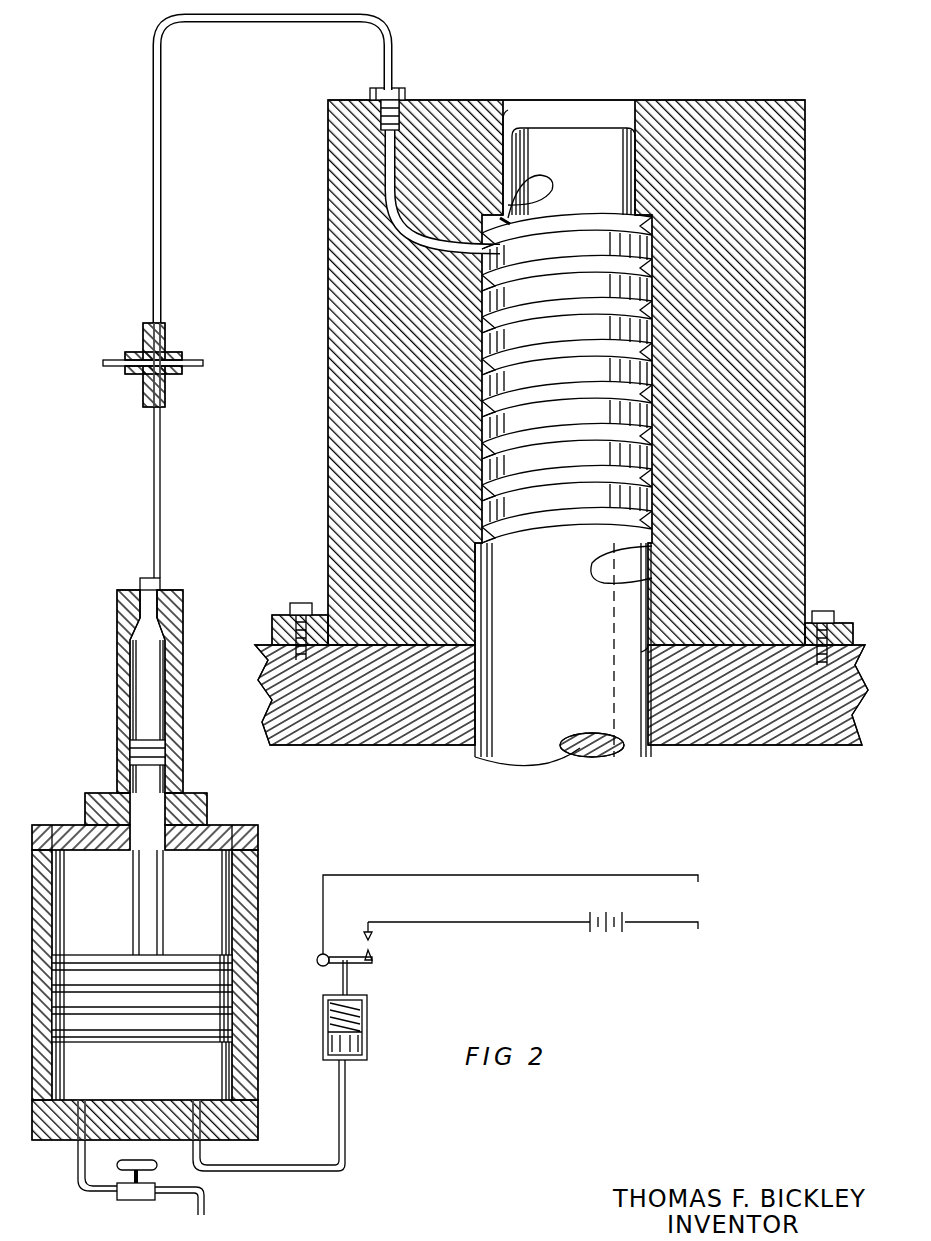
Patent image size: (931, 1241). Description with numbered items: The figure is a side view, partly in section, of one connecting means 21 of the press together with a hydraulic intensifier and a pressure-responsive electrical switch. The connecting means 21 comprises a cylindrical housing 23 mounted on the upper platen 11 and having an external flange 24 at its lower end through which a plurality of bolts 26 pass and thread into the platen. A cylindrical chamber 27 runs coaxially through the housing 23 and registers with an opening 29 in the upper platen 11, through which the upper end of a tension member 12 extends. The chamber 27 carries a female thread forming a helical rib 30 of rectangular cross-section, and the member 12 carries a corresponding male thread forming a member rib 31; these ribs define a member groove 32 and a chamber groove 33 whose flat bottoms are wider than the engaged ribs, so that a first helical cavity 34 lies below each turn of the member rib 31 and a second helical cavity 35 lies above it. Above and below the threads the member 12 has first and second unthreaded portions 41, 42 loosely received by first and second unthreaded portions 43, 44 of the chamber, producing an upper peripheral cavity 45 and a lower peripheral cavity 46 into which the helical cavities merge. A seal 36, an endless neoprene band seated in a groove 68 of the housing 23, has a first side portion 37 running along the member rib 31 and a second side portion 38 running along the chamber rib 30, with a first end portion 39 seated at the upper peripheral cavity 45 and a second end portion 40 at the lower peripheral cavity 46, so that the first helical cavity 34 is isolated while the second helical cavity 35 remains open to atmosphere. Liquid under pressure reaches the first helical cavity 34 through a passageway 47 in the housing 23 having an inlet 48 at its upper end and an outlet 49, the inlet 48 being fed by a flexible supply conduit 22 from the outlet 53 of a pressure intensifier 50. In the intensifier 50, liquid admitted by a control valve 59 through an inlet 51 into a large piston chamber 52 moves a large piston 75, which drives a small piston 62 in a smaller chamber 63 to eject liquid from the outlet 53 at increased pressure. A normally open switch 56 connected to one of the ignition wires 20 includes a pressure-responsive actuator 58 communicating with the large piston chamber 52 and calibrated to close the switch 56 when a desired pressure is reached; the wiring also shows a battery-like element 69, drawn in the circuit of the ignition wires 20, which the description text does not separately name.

The upper platen 11 is at (731, 747).
The tension member 12 is at (490, 758).
The ignition wires 20 is at (623, 876).
The connecting means 21 is at (808, 477).
The supply conduit 22 is at (163, 130).
The cylindrical housing 23 is at (806, 392).
The external flange 24 is at (845, 628).
The bolts 26 is at (820, 611).
The cylindrical chamber 27 is at (570, 108).
The opening 29 is at (632, 748).
The chamber helical rib 30 is at (485, 438).
The member helical rib 31 is at (496, 494).
The member helical thread groove 32 is at (478, 541).
The chamber helical thread groove 33 is at (650, 521).
The first helical cavity 34 is at (486, 318).
The second helical cavity 35 is at (504, 220).
The seal 36 is at (583, 228).
The seal first side portion 37 is at (632, 222).
The seal second side portion 38 is at (626, 247).
The seal first end portion 39 is at (520, 176).
The seal second end portion 40 is at (592, 566).
The member first unthreaded portion 41 is at (580, 156).
The member second unthreaded portion 42 is at (575, 636).
The chamber first unthreaded portion 43 is at (633, 110).
The chamber second unthreaded portion 44 is at (478, 590).
The upper peripheral cavity 45 is at (509, 135).
The lower peripheral cavity 46 is at (648, 658).
The passageway 47 is at (406, 212).
The inlet 48 is at (383, 104).
The outlet 49 is at (500, 247).
The pressure intensifier 50 is at (258, 893).
The inlet 51 is at (78, 1146).
The large piston chamber 52 is at (154, 1080).
The outlet 53 is at (161, 586).
The normally open switch 56 is at (318, 970).
The actuator 58 is at (367, 1016).
The control valve 59 is at (137, 1202).
The small piston 62 is at (130, 755).
The small piston chamber 63 is at (164, 672).
The groove 68 is at (486, 342).
The battery 69 is at (606, 935).
The large piston 75 is at (182, 955).